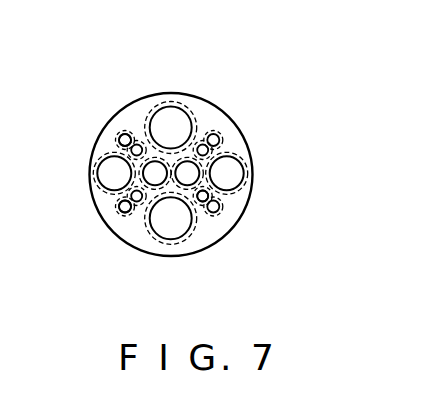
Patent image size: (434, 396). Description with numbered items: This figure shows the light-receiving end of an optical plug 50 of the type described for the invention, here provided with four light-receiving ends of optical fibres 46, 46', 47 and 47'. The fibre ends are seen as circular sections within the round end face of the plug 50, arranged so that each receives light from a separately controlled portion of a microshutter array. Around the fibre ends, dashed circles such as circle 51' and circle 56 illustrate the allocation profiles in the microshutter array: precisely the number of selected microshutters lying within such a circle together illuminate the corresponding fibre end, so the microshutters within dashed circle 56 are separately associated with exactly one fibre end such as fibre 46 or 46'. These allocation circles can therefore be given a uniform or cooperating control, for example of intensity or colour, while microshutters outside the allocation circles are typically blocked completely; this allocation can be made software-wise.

The ferrule 50 is at (155, 93).
The optical fibre 46 is at (198, 153).
The optical fibre 46' is at (77, 131).
The optical fibre 47 is at (242, 236).
The optical fibre 47' is at (84, 212).
The fiber bore 51' is at (190, 139).
The dashed circle 56 is at (137, 140).